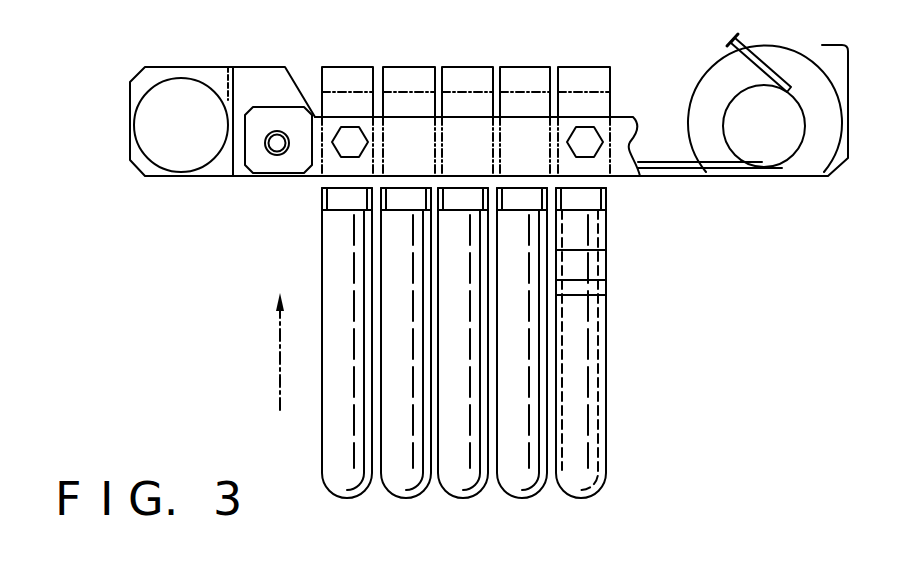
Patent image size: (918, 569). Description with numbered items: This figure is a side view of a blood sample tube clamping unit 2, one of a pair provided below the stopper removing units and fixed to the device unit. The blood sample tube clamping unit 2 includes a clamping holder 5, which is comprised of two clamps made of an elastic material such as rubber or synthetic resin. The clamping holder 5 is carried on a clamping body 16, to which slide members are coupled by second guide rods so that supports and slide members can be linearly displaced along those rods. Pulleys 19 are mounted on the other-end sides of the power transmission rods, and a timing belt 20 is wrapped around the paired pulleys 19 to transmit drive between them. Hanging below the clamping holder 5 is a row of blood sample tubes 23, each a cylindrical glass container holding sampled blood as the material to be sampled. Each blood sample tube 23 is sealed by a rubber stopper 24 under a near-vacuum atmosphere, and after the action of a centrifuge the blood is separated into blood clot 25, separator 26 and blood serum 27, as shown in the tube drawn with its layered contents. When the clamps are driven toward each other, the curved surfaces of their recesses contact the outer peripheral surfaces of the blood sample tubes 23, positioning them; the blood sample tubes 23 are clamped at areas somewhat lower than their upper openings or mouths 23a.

The blood sample tube clamping unit 2 is at (319, 59).
The clamping holder 5 is at (516, 112).
The clamping body 16 is at (260, 83).
The pulley 19 is at (784, 178).
The timing belt 20 is at (767, 70).
The blood sample tube 23 is at (405, 495).
The upper opening or mouth 23a is at (347, 200).
The stopper 24 is at (410, 82).
The blood clot 25 is at (600, 396).
The separator 26 is at (598, 288).
The blood serum 27 is at (598, 270).